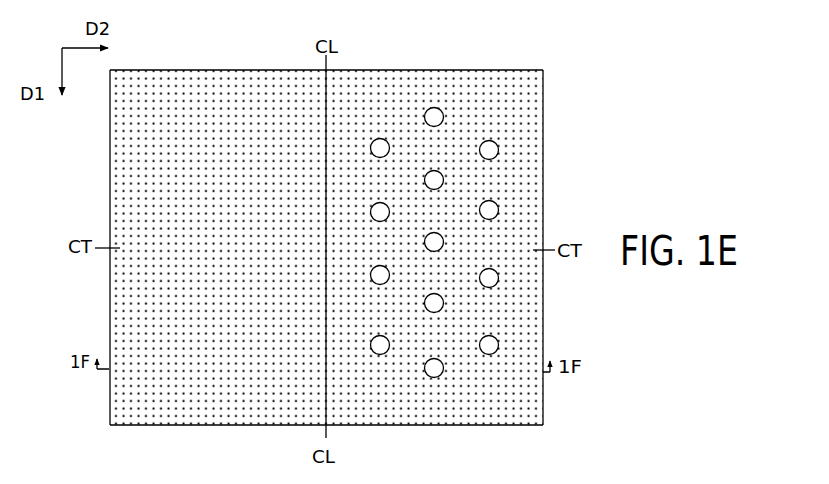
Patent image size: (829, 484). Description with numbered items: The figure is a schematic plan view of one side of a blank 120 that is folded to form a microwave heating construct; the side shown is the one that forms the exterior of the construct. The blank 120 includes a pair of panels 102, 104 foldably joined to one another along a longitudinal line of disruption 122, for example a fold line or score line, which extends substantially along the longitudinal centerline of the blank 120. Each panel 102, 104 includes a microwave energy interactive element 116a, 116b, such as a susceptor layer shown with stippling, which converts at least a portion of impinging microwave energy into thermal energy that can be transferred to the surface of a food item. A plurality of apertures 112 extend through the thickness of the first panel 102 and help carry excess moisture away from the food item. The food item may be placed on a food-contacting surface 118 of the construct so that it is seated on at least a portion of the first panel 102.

The first panel 102 is at (436, 80).
The second panel 104 is at (202, 82).
The apertures 112 is at (445, 243).
The microwave energy interactive element 116a is at (522, 179).
The microwave energy interactive element 116b is at (135, 160).
The food-contacting surface 118 is at (390, 114).
The blank 120 is at (603, 85).
The longitudinal line of disruption 122 is at (326, 204).